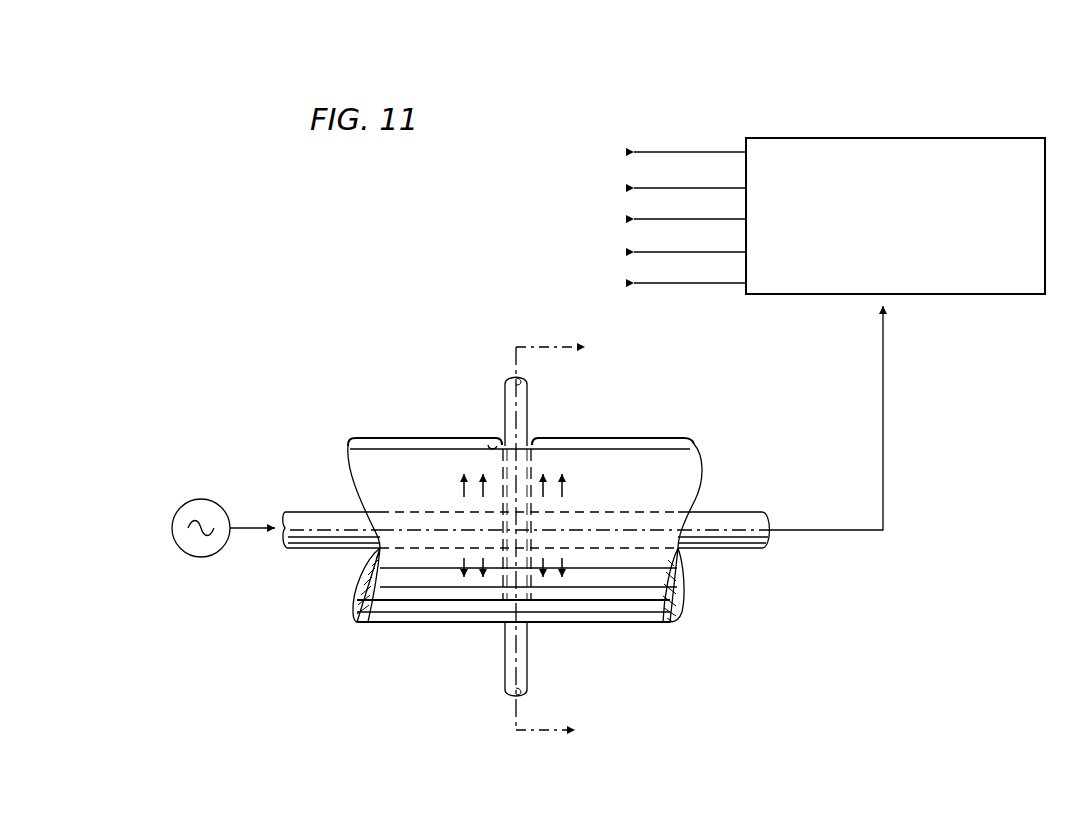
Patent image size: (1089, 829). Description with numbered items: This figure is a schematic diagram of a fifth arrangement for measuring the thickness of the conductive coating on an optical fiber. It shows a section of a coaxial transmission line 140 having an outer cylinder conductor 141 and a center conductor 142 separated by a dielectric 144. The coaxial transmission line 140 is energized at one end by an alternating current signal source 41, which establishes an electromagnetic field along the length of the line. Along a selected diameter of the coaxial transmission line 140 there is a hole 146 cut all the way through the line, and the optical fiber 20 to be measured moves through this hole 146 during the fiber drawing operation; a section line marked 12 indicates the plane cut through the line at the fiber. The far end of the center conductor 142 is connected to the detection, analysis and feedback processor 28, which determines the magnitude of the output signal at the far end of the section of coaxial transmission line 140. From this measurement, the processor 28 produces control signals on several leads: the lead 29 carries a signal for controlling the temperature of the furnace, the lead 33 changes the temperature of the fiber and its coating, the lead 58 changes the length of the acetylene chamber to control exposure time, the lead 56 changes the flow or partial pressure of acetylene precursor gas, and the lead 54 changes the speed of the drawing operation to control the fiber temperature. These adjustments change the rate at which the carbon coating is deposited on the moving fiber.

The detection, analysis and feedback processor 28 is at (985, 138).
The lead 29 is at (662, 152).
The lead 33 is at (683, 188).
The lead 58 is at (695, 219).
The lead 56 is at (695, 252).
The lead 54 is at (700, 283).
The coaxial transmission line 140 is at (362, 345).
The outer cylinder conductor 141 is at (390, 437).
The hole 146 is at (483, 440).
The optical fiber 20 is at (528, 416).
The section line 12- 12 is at (569, 541).
The alternating current signal source 41 is at (218, 500).
The center conductor 142 is at (728, 512).
The dielectric 144 is at (683, 582).